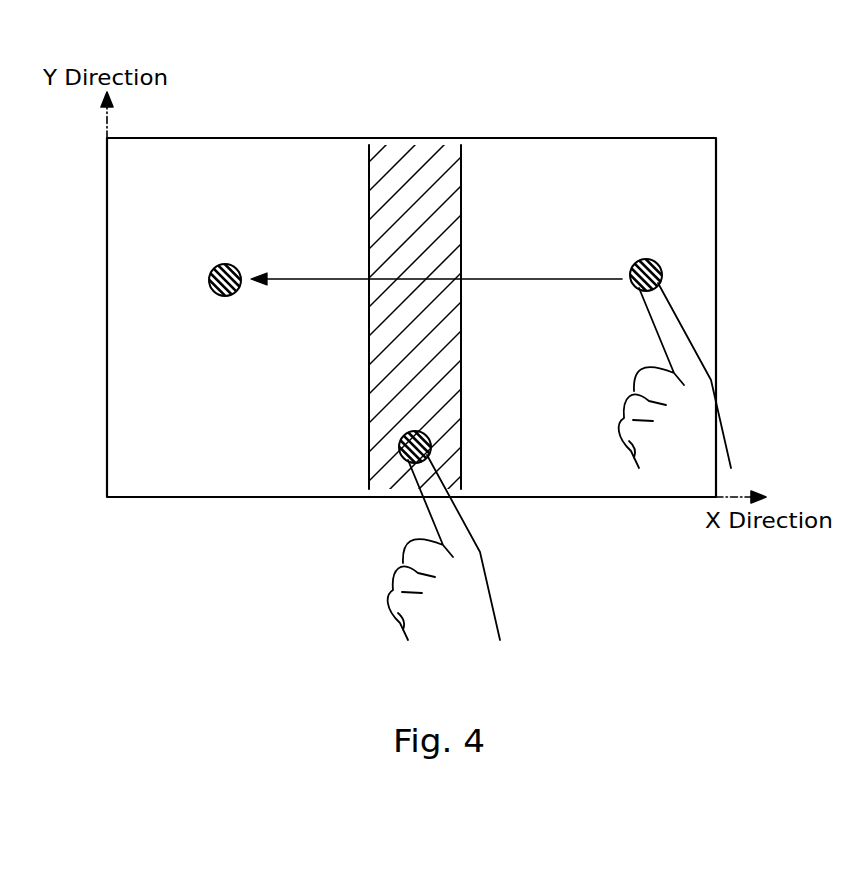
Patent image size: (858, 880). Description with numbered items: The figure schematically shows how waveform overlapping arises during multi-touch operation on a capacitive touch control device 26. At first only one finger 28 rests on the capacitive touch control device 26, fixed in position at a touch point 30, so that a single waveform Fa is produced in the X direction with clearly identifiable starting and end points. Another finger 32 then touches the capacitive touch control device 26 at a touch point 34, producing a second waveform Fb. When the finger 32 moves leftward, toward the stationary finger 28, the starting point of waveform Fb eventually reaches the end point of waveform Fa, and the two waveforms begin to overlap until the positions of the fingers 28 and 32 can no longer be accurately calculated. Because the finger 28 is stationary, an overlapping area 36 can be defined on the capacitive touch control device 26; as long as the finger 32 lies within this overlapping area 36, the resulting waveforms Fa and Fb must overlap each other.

The capacitive touch control device 26 is at (592, 157).
The finger 28 is at (433, 504).
The touch point 30 is at (399, 444).
The finger 32 is at (657, 312).
The touch point 34 is at (632, 266).
The overlapping area 36 is at (413, 143).